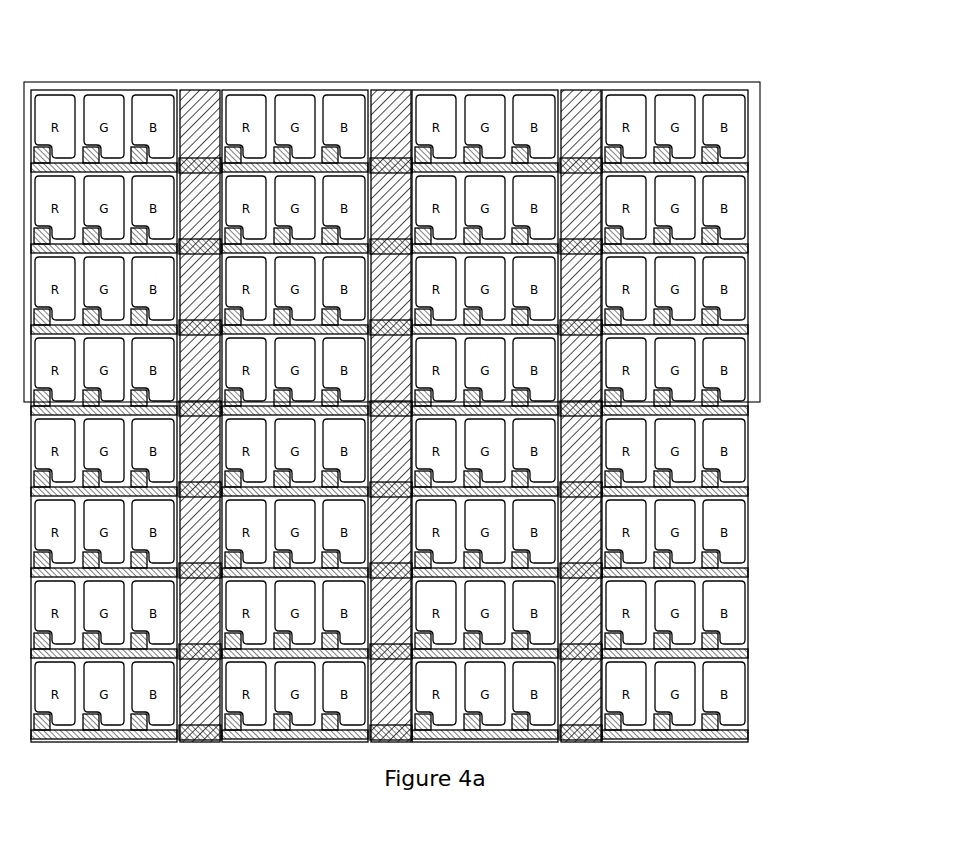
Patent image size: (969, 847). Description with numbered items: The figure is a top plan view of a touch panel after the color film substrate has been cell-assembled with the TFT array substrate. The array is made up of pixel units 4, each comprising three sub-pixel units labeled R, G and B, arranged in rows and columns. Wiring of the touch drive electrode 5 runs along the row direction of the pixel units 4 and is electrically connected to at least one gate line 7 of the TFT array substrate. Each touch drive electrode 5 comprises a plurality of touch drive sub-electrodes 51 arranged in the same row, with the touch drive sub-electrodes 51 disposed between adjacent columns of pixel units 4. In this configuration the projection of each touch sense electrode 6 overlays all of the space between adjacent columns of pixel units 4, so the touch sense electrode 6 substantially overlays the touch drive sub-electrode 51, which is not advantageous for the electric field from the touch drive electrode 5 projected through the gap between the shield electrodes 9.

The pixel unit 4 is at (430, 379).
The touch drive electrode 5 is at (760, 165).
The touch sense electrode 6 is at (388, 92).
The gate line 7 is at (750, 245).
The shield electrode 9 is at (93, 92).
The touch drive sub-electrode 51 is at (205, 92).